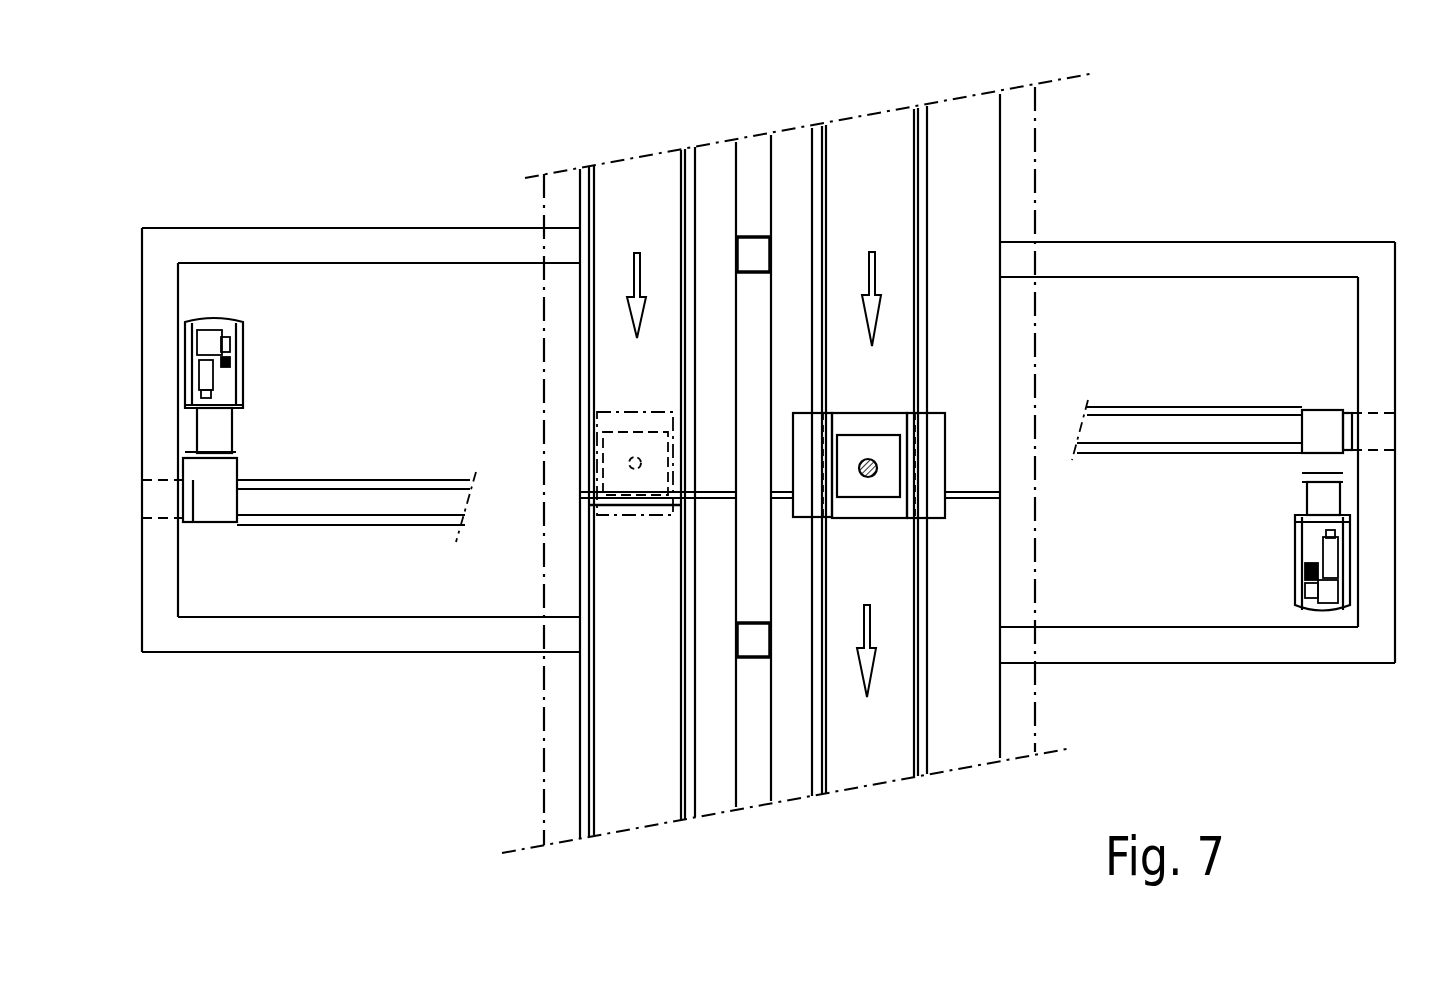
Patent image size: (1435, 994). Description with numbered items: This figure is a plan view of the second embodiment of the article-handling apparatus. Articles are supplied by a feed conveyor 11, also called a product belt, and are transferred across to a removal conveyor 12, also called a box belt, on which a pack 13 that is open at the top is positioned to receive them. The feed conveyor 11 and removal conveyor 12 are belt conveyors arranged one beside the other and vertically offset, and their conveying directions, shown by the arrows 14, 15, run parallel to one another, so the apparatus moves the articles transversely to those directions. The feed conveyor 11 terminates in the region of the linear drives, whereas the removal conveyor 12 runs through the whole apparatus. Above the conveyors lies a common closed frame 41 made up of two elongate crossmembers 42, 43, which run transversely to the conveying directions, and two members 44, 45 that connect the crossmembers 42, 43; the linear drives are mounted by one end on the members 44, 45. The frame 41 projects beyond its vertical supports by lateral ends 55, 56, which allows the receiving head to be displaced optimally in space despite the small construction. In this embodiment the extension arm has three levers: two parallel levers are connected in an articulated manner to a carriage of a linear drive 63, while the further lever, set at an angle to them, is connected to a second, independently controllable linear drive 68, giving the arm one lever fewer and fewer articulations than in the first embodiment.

The feed conveyor 11 is at (657, 126).
The removal conveyor 12 is at (879, 103).
The pack 13 is at (938, 401).
The arrow 14 is at (634, 298).
The arrow 15 is at (877, 303).
The frame 41 is at (1338, 233).
The crossmember 42 is at (358, 245).
The crossmember 43 is at (425, 635).
The member 44 is at (1377, 317).
The member 45 is at (155, 304).
The lateral end 55 is at (240, 663).
The lateral end 56 is at (1232, 678).
The linear drive 63 is at (340, 537).
The linear drive 68 is at (1213, 401).